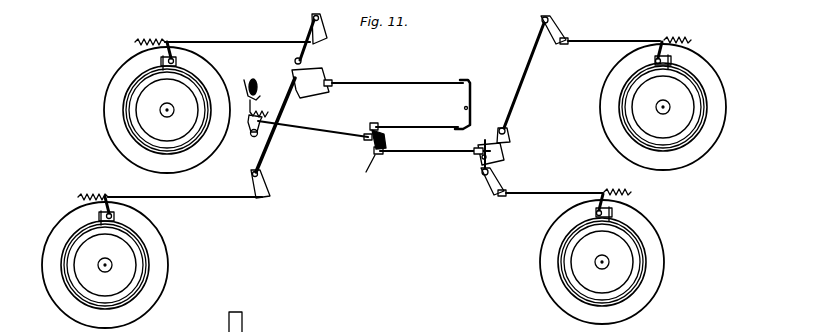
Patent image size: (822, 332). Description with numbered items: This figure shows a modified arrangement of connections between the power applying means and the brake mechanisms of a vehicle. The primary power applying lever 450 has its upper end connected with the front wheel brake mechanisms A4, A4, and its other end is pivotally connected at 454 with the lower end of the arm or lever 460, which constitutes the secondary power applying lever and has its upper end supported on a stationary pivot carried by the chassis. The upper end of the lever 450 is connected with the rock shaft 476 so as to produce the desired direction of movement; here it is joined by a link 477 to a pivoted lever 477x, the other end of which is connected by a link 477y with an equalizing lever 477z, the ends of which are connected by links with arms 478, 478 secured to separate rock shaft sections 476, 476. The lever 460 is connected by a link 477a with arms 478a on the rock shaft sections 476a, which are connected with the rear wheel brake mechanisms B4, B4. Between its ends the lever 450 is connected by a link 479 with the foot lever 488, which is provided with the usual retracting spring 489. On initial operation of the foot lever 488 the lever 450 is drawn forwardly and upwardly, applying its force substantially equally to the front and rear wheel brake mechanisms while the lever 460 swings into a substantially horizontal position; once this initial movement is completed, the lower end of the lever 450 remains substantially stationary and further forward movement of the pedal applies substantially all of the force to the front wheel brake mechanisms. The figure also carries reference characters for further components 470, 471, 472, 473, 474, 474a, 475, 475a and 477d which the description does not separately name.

The primary power applying lever 450 is at (372, 146).
The pivotal connection 454 is at (368, 168).
The secondary power applying lever 460 is at (386, 148).
The wheel 470 is at (188, 90).
The brake drum 471 is at (128, 124).
The brake lever bracket 472 is at (173, 50).
The return spring 473 is at (150, 31).
The brake rod 474 is at (260, 40).
The brake rod 474a is at (634, 40).
The bell crank lever 475 is at (327, 30).
The bell crank lever 475a is at (558, 26).
The rock shaft 476 is at (306, 52).
The rock shaft sections 476a is at (522, 85).
The link 477 is at (418, 126).
The link 477a is at (450, 153).
The equalizer pin 477d is at (476, 168).
The pivoted lever 477x is at (471, 98).
The link 477y is at (418, 82).
The equalizing lever 477z is at (330, 90).
The arms 478 is at (296, 66).
The arms 478a is at (500, 156).
The link 479 is at (322, 127).
The foot lever 488 is at (246, 80).
The retracting spring 489 is at (263, 100).
The front wheel brake mechanisms A4 is at (150, 98).
The rear wheel brake mechanisms B4 is at (688, 108).